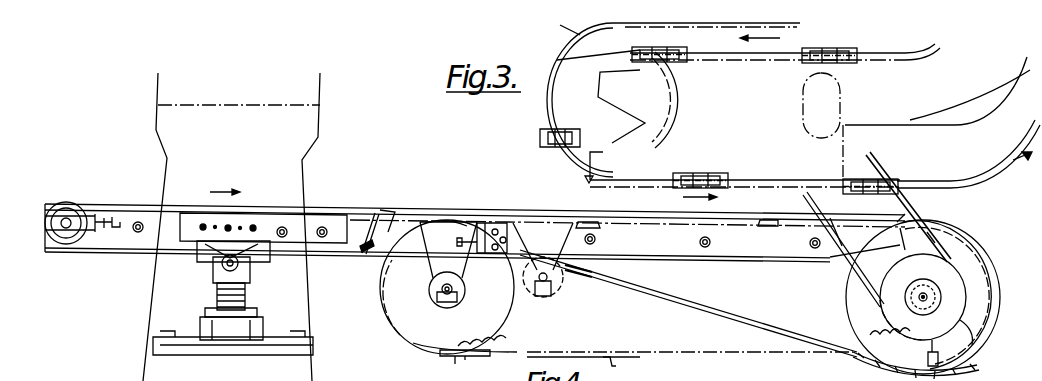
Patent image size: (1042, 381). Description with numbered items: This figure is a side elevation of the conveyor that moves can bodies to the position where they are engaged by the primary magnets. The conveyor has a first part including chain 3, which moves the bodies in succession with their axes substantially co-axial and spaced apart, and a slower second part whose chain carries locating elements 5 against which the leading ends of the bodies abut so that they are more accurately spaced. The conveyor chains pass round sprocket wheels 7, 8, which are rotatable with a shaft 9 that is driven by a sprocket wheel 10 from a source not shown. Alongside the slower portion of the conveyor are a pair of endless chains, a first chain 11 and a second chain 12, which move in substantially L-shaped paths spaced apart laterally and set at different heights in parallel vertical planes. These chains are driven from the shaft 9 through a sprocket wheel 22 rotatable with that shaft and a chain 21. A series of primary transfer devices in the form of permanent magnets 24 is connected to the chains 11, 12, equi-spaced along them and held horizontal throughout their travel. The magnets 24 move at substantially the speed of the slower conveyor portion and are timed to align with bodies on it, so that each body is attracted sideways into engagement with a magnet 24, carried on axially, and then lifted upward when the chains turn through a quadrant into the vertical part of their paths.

The chain 3 is at (586, 268).
The locating elements 5 is at (405, 213).
The sprocket wheel 7 is at (980, 323).
The sprocket wheel 8 is at (972, 364).
The shaft 9 is at (940, 285).
The sprocket wheel 10 is at (963, 348).
The first chain 11 is at (731, 33).
The second chain 12 is at (731, 62).
The chain 21 is at (872, 160).
The sprocket wheel 22 is at (973, 287).
The permanent magnets 24 is at (540, 137).